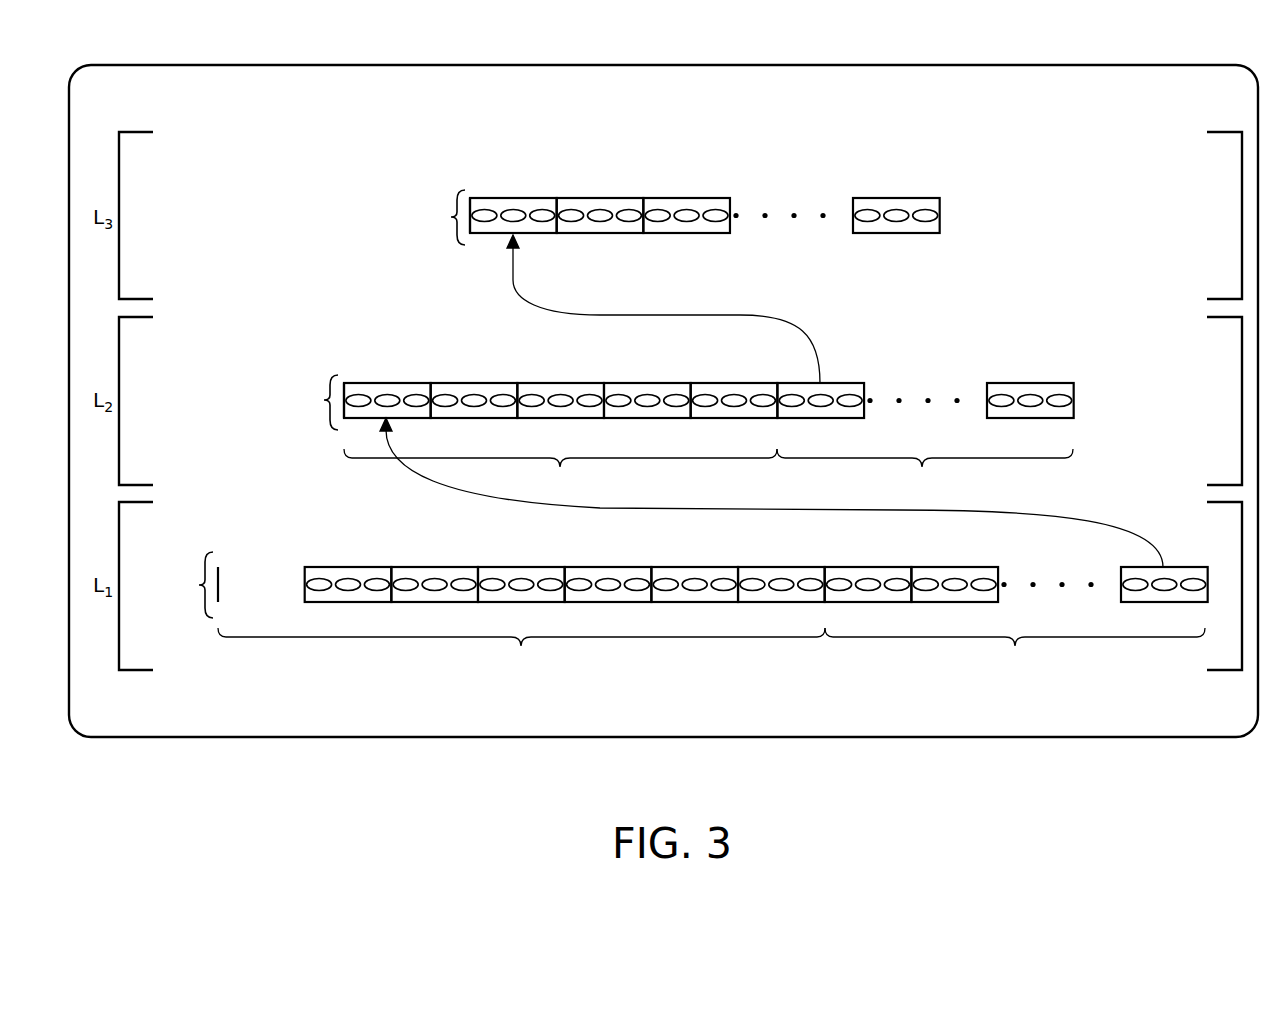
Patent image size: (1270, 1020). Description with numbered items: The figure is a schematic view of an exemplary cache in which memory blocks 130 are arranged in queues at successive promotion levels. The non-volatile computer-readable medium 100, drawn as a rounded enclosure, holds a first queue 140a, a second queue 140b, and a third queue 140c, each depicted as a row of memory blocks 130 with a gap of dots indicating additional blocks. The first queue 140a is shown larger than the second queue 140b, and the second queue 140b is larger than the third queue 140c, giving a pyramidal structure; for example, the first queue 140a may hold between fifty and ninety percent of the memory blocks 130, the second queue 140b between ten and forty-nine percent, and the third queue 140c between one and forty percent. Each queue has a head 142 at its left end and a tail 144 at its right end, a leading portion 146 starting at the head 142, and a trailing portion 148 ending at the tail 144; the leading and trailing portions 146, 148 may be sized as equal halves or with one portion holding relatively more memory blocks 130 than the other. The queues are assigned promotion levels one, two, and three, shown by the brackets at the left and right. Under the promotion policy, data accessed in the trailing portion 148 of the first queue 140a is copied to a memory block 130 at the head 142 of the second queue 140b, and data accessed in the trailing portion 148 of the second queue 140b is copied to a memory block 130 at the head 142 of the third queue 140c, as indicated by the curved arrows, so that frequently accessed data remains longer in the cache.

The non-volatile computer-readable medium 100 is at (1040, 50).
The memory block 130 is at (511, 198).
The first queue 140a is at (619, 585).
The second queue 140b is at (614, 402).
The third queue 140c is at (611, 217).
The head 142 is at (489, 184).
The tail 144 is at (918, 183).
The leading portion 146 is at (521, 563).
The trailing portion 148 is at (991, 563).